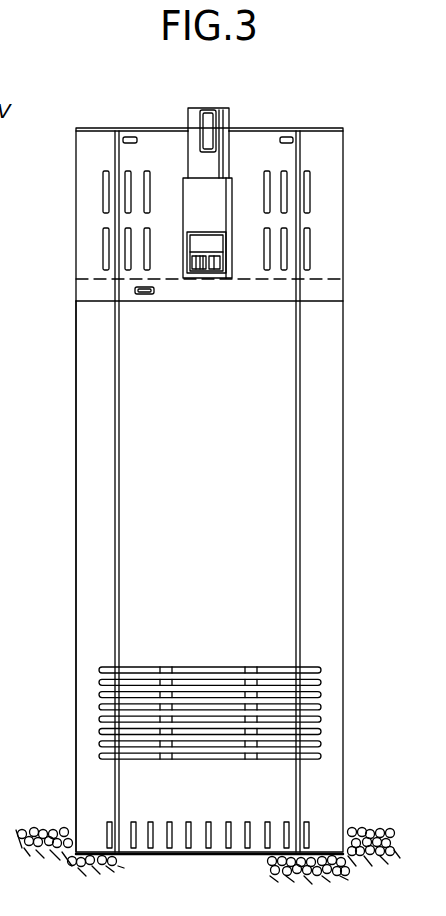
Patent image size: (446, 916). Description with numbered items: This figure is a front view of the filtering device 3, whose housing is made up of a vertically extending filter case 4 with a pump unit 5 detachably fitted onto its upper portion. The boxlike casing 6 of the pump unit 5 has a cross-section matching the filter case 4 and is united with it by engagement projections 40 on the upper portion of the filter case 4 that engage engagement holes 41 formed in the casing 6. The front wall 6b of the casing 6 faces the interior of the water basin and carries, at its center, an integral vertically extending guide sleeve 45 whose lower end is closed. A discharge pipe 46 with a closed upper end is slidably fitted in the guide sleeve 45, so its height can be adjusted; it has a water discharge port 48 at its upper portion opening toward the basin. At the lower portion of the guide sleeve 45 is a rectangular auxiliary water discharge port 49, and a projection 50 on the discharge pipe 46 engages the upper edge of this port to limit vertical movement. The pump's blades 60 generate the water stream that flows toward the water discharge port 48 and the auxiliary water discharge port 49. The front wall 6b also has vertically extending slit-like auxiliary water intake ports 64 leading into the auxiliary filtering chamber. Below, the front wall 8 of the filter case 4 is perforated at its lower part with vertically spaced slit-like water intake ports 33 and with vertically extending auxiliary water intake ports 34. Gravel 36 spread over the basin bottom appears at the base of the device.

The filtering device 3 is at (36, 283).
The filter case 4 is at (72, 356).
The pump unit 5 is at (72, 277).
The casing 6 is at (100, 130).
The front wall of the casing 6b is at (152, 143).
The front wall of the filter case 8 is at (81, 548).
The water intake ports 33 is at (207, 685).
The auxiliary water intake ports 34 is at (188, 850).
The gravel 36 is at (38, 830).
The engagement projections 40 is at (141, 295).
The engagement holes 41 is at (149, 295).
The guide sleeve 45 is at (191, 205).
The discharge pipe 46 is at (220, 158).
The water discharge port 48 is at (212, 120).
The auxiliary water discharge port 49 is at (220, 269).
The projection 50 is at (208, 240).
The blades 60 is at (201, 269).
The auxiliary water intake ports 64 is at (308, 206).